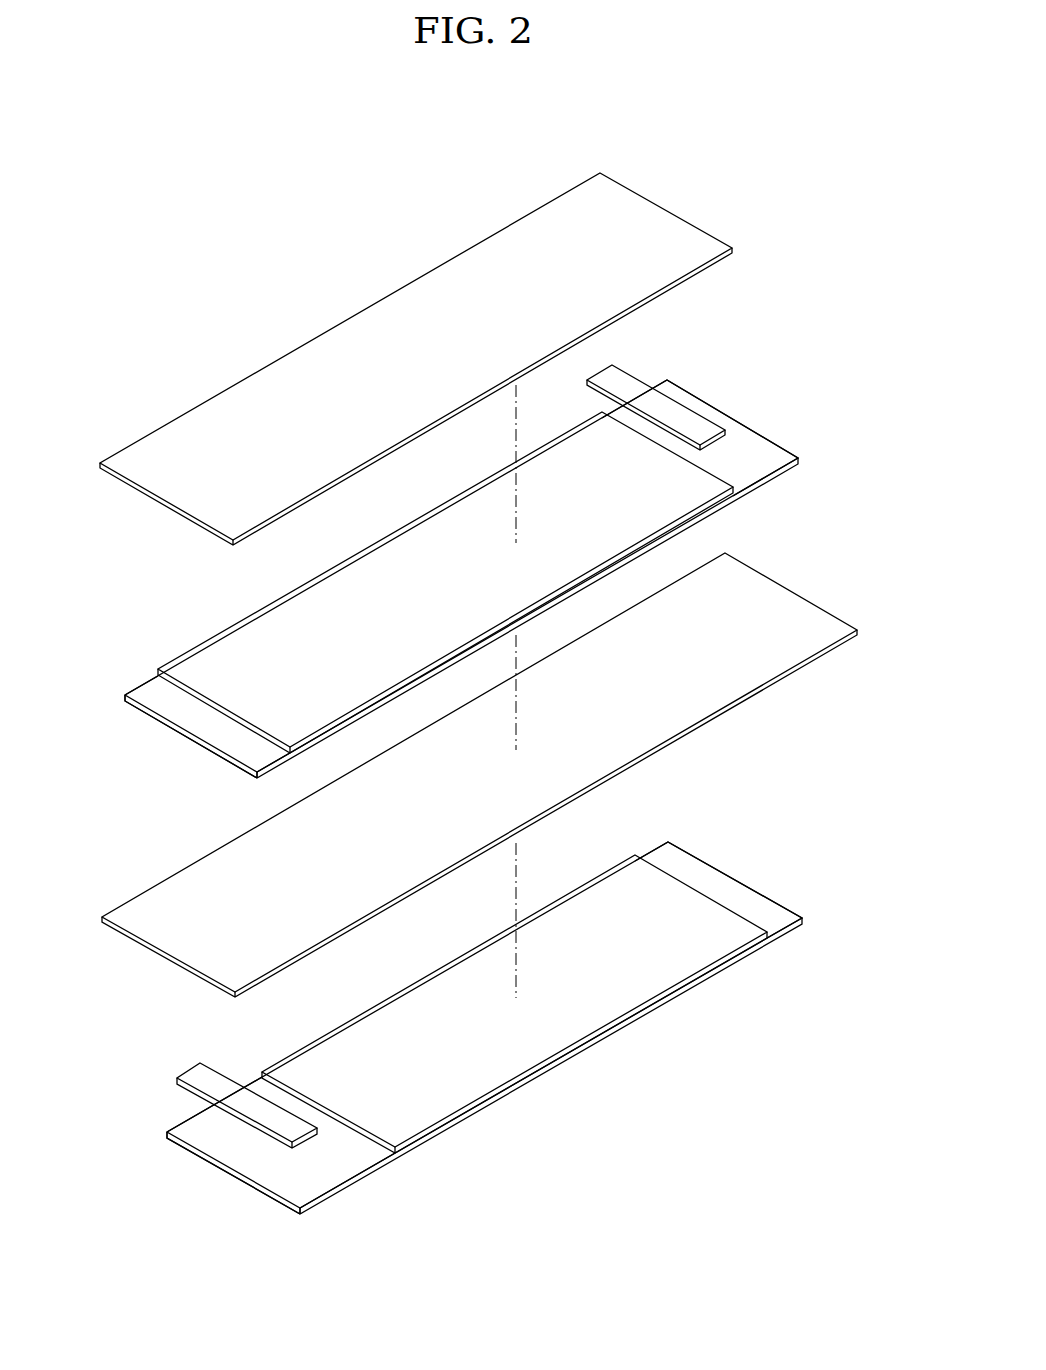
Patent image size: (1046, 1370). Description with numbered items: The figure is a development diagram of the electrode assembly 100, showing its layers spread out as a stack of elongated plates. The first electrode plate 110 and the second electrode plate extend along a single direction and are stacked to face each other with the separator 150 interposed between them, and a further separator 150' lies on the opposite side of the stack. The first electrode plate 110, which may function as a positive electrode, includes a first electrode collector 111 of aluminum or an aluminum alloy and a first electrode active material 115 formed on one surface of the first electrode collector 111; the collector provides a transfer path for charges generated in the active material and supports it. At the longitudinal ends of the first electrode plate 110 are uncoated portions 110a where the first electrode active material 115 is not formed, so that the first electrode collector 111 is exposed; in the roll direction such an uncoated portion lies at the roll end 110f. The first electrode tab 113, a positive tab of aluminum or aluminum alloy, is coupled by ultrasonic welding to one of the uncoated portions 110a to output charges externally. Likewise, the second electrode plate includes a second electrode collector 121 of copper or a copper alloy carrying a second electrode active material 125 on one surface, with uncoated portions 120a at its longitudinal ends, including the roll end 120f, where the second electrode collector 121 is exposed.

The electrode assembly 100 is at (471, 663).
The separator 150' is at (439, 329).
The separator 150 is at (490, 738).
The uncoated portions 120a is at (441, 583).
The roll end 120f is at (775, 390).
The second electrode collector 121 is at (435, 583).
The second electrode active material 125 is at (312, 610).
The first electrode plate 110 is at (469, 986).
The uncoated portions 110a is at (449, 1008).
The roll end 110f is at (195, 1128).
The first electrode collector 111 is at (449, 1008).
The first electrode active material 115 is at (418, 1010).
The first electrode tab 113 is at (213, 1075).